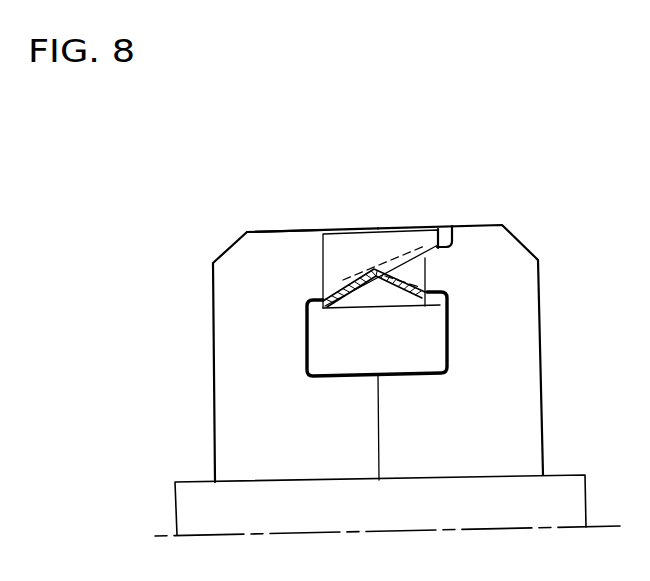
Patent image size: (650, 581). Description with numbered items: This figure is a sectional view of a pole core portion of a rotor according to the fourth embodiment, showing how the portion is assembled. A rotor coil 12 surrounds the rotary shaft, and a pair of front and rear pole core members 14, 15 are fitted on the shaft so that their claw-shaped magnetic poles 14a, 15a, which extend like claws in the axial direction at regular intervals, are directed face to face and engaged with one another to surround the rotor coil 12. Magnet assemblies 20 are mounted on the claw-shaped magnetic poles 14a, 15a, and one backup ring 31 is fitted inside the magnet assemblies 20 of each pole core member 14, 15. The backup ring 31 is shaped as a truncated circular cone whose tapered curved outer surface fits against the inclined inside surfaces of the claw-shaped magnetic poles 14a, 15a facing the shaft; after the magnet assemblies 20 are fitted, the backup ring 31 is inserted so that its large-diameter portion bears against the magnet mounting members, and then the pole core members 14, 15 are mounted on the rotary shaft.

The rotor coil 12 is at (447, 340).
The front pole core member 14 is at (530, 292).
The claw-shaped magnetic pole 14a is at (423, 268).
The rear pole core member 15 is at (222, 313).
The claw-shaped magnetic pole 15a is at (308, 265).
The magnet assembly 20 is at (373, 243).
The backup ring 31 is at (423, 288).